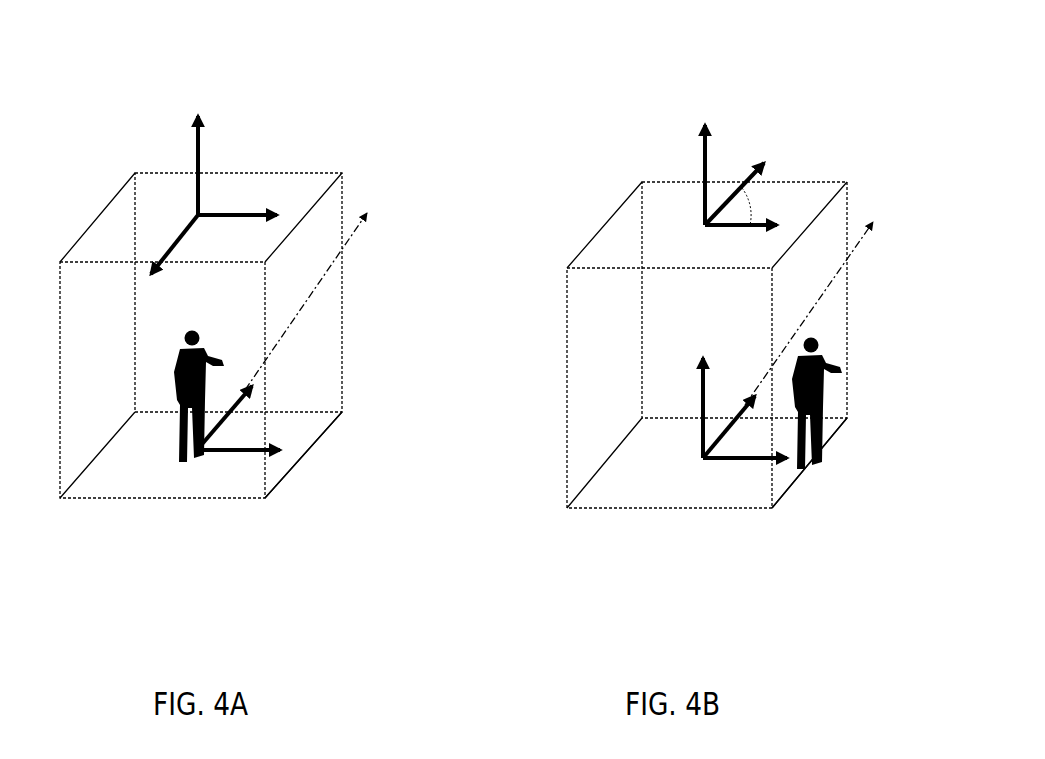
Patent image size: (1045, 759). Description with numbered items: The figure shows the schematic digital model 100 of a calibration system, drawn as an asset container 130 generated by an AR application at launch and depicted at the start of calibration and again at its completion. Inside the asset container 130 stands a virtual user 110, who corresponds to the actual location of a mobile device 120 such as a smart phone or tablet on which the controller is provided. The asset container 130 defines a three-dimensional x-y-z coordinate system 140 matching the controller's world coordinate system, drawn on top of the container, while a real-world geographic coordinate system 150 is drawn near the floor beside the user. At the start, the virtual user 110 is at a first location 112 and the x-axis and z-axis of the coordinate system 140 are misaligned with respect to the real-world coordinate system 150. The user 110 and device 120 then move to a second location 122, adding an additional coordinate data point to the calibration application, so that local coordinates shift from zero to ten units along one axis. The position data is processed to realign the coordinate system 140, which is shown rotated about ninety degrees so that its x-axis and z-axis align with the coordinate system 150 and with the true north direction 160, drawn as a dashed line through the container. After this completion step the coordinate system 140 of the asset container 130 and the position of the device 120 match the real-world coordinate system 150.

In FIG. 4A, the schematic digital model 100 is at (145, 80).
In FIG. 4B, the schematic digital model 100 is at (665, 95).
In FIG. 4A, the virtual user 110 is at (165, 360).
In FIG. 4B, the virtual user 110 is at (832, 350).
In FIG. 4A, the first location 112 is at (197, 473).
In FIG. 4A, the mobile device 120 is at (235, 358).
In FIG. 4B, the second location 122 is at (835, 455).
In FIG. 4A, the asset container 130 is at (275, 497).
In FIG. 4B, the asset container 130 is at (790, 487).
In FIG. 4A, the coordinate system 140 is at (185, 178).
In FIG. 4B, the coordinate system 140 is at (675, 170).
In FIG. 4A, the real-world coordinate system 150 is at (225, 435).
In FIG. 4B, the real-world coordinate system 150 is at (695, 428).
In FIG. 4A, the true north direction 160 is at (365, 200).
In FIG. 4B, the true north direction 160 is at (868, 215).